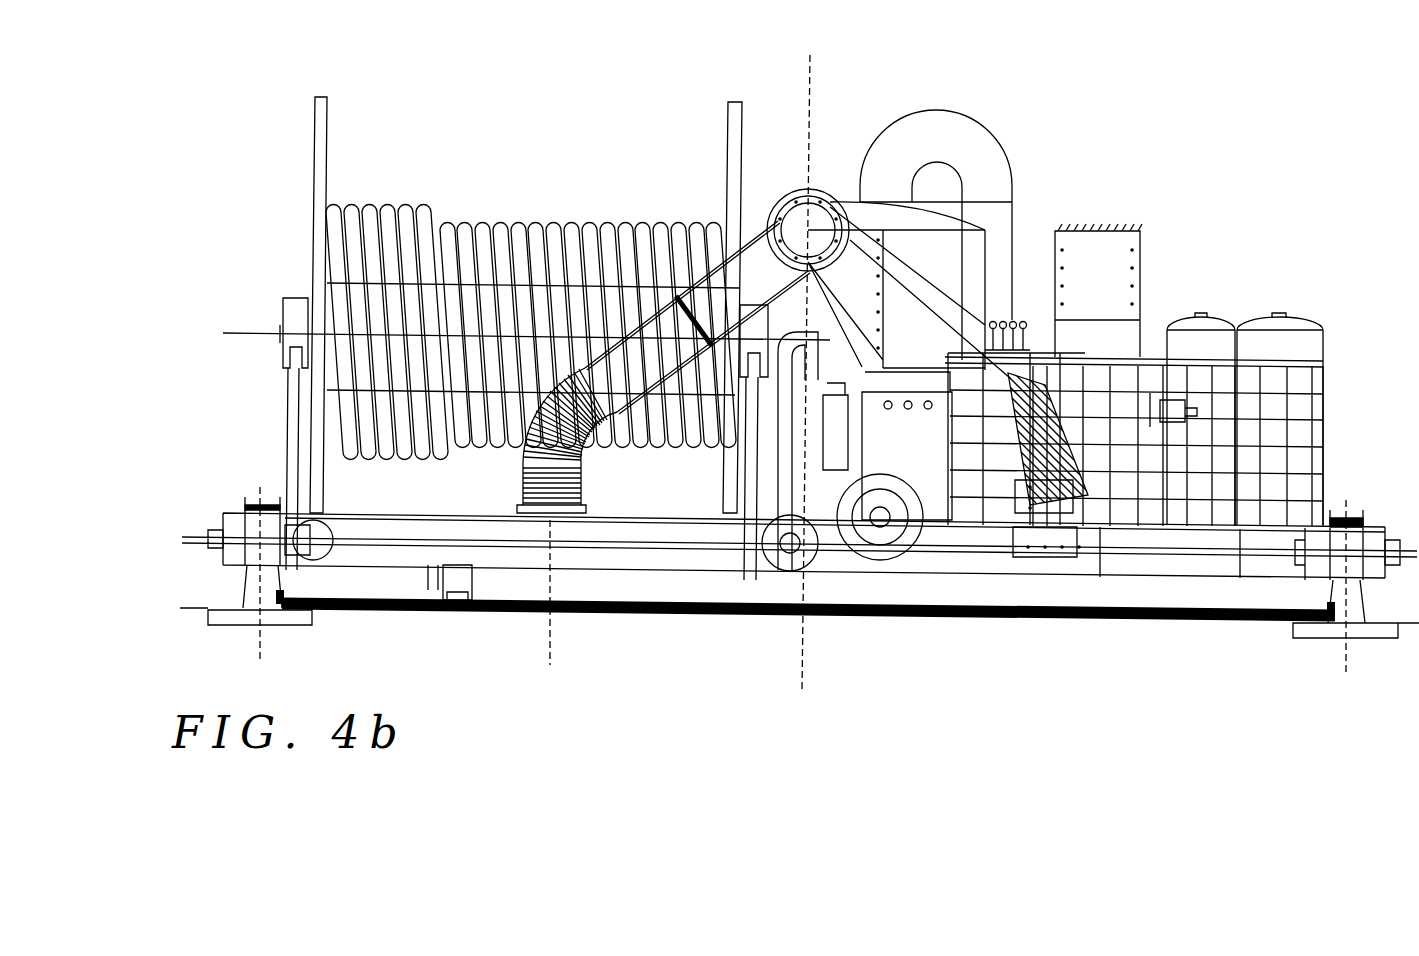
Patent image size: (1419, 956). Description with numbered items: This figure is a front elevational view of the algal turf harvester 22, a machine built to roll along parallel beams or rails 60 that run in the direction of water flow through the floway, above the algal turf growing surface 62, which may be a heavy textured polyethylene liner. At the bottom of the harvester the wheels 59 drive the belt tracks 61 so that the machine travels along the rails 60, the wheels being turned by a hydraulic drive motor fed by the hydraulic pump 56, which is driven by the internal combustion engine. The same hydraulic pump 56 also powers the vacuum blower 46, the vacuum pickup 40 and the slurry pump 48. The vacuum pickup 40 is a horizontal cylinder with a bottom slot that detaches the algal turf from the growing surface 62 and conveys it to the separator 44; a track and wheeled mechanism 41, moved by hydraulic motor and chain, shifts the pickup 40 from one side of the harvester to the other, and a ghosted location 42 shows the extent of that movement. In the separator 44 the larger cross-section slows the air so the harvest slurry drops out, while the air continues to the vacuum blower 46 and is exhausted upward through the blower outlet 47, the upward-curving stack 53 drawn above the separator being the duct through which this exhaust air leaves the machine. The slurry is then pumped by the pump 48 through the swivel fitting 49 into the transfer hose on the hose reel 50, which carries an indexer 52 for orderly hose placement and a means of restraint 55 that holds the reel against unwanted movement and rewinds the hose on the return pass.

The algal turf harvester 22 is at (1220, 120).
The vacuum pickup 40 is at (518, 557).
The track and wheeled mechanism 41 is at (762, 568).
The ghosted location 42 is at (1170, 562).
The separator 44 is at (933, 257).
The vacuum blower 46 is at (1107, 270).
The blower outlet 47 is at (1075, 227).
The pump 48 is at (823, 573).
The swivel fitting 49 is at (818, 212).
The hose reel 50 is at (415, 227).
The indexer 52 is at (433, 613).
The exhaust stack 53 is at (975, 148).
The means of restraint 55 is at (757, 323).
The hydraulic pump 56 is at (1017, 560).
The wheels 59 is at (248, 498).
The beams or rails 60 is at (799, 663).
The belt tracks 61 is at (1338, 513).
The algal turf growing surface 62 is at (933, 617).